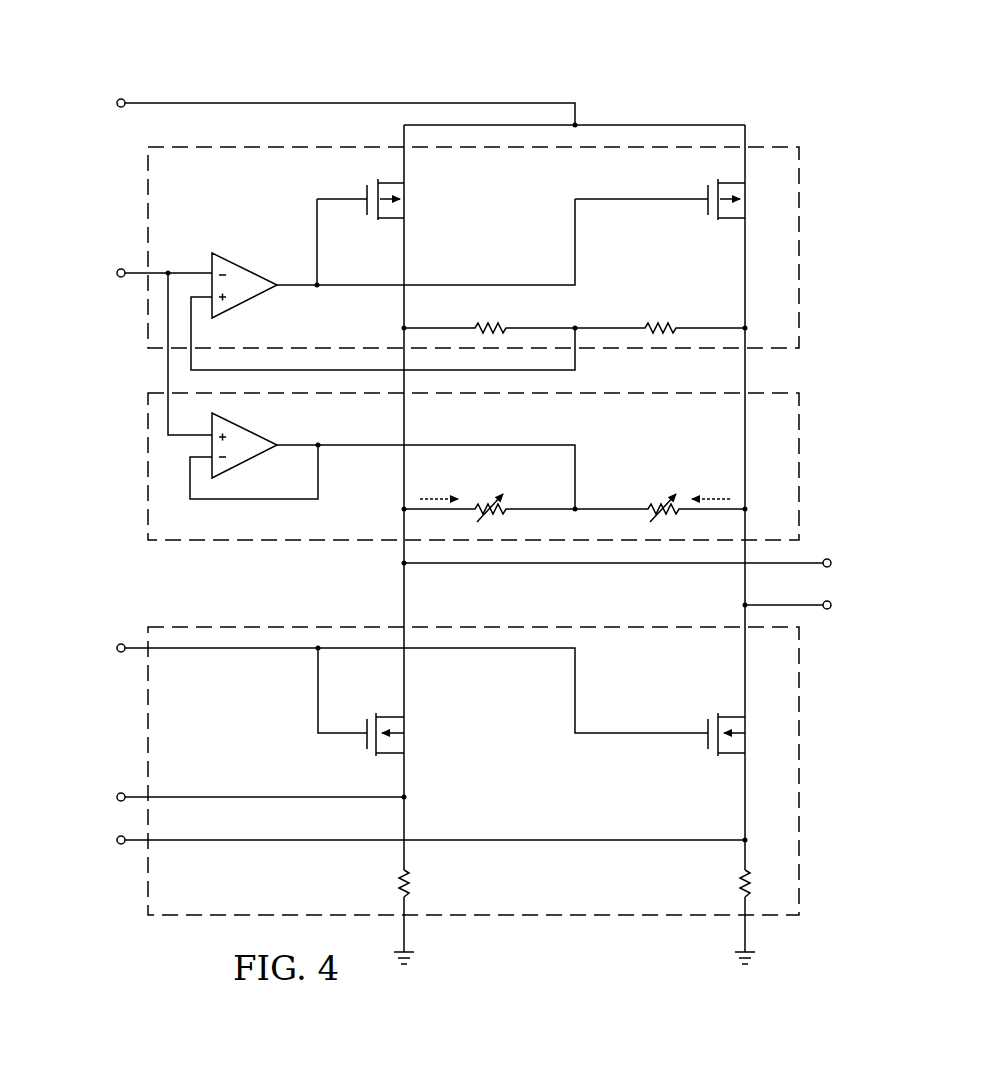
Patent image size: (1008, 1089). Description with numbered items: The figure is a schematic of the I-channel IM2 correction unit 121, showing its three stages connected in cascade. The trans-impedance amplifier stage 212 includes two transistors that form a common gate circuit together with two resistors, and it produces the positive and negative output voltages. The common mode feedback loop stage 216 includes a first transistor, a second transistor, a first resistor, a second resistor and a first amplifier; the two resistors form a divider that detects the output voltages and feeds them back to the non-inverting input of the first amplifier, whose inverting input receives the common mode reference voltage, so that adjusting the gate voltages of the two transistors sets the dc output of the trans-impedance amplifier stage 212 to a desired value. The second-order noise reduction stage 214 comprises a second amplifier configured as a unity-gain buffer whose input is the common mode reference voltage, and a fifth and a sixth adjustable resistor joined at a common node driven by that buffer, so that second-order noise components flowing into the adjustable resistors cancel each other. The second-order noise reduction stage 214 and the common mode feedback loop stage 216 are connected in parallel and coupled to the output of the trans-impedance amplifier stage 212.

The I-channel IM2 correction unit 121 is at (672, 58).
The common mode feedback loop stage 216 is at (806, 230).
The second-order noise reduction stage 214 is at (806, 449).
The trans-impedance amplifier stage 212 is at (806, 785).